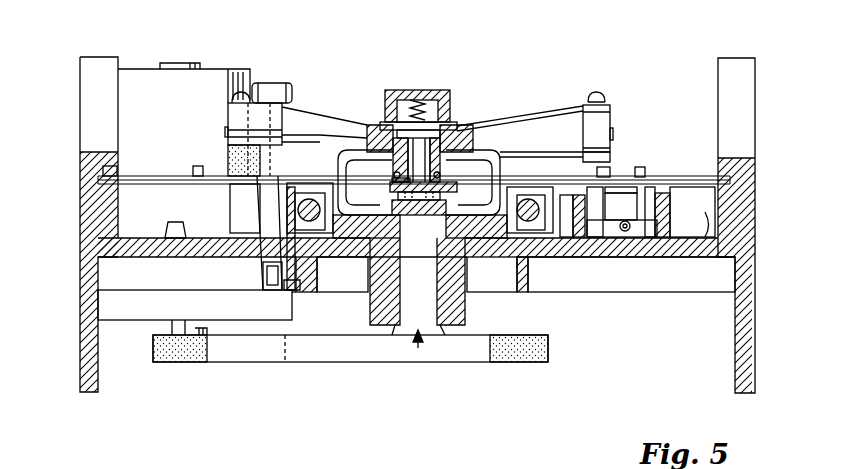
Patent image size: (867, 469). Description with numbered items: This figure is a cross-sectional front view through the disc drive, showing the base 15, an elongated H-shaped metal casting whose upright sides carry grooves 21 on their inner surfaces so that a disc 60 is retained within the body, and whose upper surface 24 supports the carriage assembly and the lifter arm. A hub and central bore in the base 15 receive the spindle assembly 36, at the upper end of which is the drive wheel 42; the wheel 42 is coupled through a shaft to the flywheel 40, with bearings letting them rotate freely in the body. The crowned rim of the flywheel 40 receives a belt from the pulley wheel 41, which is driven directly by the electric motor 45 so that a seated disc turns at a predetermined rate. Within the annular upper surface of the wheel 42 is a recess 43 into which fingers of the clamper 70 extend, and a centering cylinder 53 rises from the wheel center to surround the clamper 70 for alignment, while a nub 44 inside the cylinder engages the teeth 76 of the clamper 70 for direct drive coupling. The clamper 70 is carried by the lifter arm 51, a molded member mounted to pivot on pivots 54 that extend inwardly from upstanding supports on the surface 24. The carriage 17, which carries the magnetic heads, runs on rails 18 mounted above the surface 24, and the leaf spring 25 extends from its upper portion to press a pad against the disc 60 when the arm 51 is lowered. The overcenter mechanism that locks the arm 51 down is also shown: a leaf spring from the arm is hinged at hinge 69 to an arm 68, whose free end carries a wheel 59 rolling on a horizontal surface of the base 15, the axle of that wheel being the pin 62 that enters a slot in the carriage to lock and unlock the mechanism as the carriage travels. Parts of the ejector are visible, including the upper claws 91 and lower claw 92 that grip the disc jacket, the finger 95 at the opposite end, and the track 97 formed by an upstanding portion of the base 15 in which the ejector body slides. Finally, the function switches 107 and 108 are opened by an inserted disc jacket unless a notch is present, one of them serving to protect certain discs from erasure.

The base 15 is at (756, 120).
The carriage 17 is at (412, 274).
The rails 18 is at (312, 200).
The grooves 21 is at (96, 178).
The upper surface 24 is at (675, 212).
The leaf spring 25 is at (418, 90).
The spindle assembly 36 is at (418, 350).
The flywheel 40 is at (497, 356).
The pulley wheel 41 is at (170, 362).
The drive wheel 42 is at (500, 178).
The recess 43 is at (366, 222).
The nub 44 is at (460, 222).
The electric motor 45 is at (140, 74).
The lifter arm 51 is at (320, 106).
The centering cylinder 53 is at (372, 190).
The pivots 54 is at (225, 131).
The wheel 59 is at (265, 290).
The disc 60 is at (155, 184).
The pin 62 is at (292, 288).
The arm 68 is at (284, 103).
The hinge 69 is at (266, 83).
The clamper 70 is at (473, 160).
The teeth 76 is at (420, 186).
The upper claws 91 is at (640, 167).
The lower claw 92 is at (620, 200).
The finger 95 is at (578, 193).
The track 97 is at (690, 224).
The function switch 107 is at (120, 166).
The function switch 108 is at (198, 166).